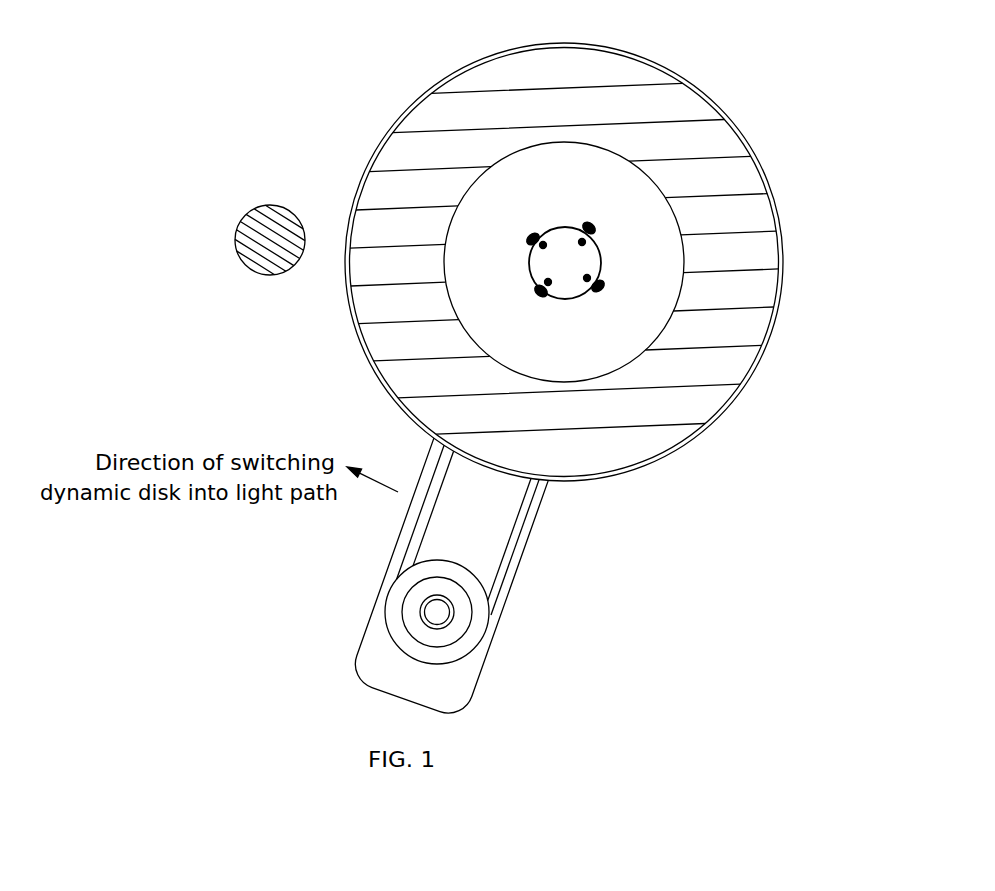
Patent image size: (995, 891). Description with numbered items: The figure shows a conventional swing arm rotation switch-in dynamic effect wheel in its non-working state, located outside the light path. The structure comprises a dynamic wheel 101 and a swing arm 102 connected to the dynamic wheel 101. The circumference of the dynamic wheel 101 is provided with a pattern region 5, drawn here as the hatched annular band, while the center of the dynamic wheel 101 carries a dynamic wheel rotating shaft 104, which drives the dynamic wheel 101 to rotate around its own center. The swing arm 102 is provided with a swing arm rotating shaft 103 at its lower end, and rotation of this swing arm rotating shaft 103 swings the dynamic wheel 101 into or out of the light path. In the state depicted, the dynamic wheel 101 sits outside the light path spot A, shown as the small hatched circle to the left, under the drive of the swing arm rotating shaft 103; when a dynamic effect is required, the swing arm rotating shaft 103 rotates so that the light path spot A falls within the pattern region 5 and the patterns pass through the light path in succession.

The pattern region 5 is at (446, 85).
The dynamic wheel 101 is at (711, 82).
The swing arm 102 is at (552, 537).
The swing arm rotating shaft 103 is at (457, 617).
The dynamic wheel rotating shaft 104 is at (611, 312).
The light path spot A is at (233, 204).